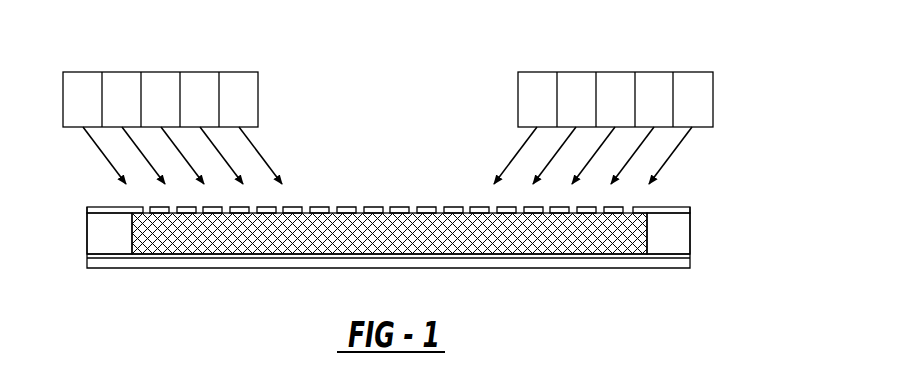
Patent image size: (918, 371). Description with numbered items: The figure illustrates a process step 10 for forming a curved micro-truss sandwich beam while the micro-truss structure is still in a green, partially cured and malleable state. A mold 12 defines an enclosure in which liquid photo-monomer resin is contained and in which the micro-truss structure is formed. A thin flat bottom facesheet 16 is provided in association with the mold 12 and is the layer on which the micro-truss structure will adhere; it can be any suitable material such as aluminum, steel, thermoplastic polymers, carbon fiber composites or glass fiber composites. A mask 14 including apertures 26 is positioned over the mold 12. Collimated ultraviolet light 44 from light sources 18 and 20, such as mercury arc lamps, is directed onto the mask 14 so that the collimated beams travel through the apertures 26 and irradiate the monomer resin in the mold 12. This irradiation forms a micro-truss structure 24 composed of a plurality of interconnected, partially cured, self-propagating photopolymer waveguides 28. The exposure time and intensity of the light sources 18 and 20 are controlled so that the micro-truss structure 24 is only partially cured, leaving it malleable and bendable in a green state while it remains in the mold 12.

The process step 10 is at (692, 48).
The mold 12 is at (682, 241).
The mask 14 is at (673, 207).
The bottom facesheet 16 is at (487, 260).
The light source 18 is at (258, 100).
The light source 20 is at (518, 97).
The micro-truss structure 24 is at (193, 238).
The apertures 26 is at (415, 207).
The self-propagating photopolymer waveguides 28 is at (277, 240).
The collimated ultraviolet light 44 is at (262, 153).